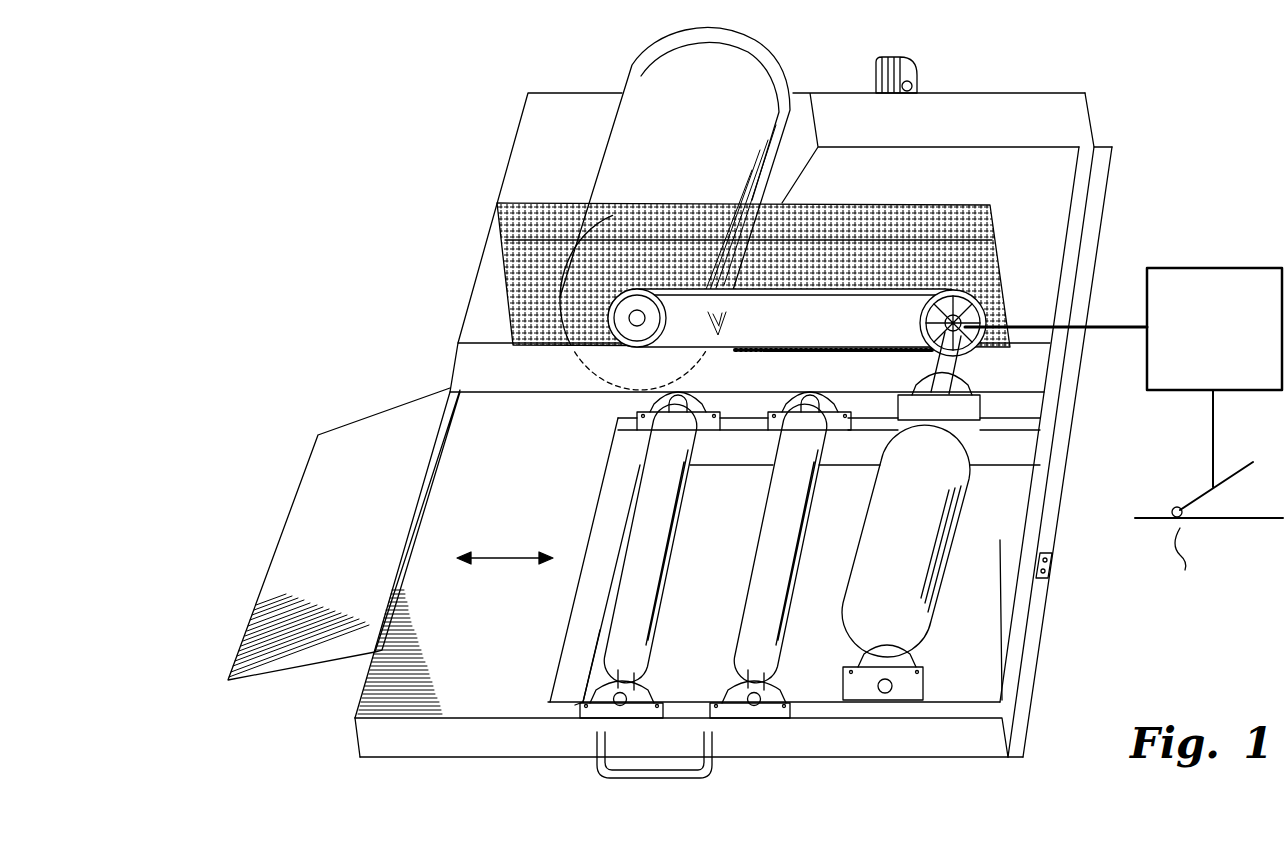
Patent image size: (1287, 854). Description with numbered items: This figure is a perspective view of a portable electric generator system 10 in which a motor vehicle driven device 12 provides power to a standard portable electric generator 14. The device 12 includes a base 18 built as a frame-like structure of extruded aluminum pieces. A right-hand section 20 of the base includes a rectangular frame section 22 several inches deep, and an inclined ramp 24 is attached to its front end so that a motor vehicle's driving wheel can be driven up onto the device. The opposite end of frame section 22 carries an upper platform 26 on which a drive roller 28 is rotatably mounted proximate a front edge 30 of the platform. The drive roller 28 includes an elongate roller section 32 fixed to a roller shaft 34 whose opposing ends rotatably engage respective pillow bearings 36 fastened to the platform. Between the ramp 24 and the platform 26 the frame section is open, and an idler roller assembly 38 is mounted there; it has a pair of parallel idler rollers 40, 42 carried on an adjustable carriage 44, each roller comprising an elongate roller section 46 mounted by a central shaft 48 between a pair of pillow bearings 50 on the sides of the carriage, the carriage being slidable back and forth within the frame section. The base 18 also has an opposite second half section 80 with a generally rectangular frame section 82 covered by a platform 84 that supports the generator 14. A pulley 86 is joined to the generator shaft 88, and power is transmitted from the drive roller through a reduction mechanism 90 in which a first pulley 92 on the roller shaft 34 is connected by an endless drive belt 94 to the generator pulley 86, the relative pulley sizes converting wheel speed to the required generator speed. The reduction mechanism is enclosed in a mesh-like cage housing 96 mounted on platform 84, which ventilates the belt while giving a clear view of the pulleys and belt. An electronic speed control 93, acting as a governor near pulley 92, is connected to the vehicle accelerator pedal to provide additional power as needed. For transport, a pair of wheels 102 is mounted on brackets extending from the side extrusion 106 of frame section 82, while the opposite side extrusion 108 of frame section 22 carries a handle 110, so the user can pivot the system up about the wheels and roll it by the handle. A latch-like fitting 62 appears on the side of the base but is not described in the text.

The portable electric generator system 10 is at (372, 140).
The motor vehicle driven device 12 is at (1070, 533).
The portable electric generator 14 is at (768, 45).
The base 18 is at (987, 745).
The right-hand section 20 is at (428, 737).
The rectangular frame section 22 is at (367, 735).
The inclined ramp 24 is at (322, 490).
The upper platform 26 is at (980, 692).
The drive roller 28 is at (938, 550).
The front edge 30 is at (820, 672).
The elongate roller section 32 is at (936, 507).
The roller shaft 34 is at (938, 427).
The pillow bearings 36 is at (960, 405).
The idler roller assembly 38 is at (618, 483).
The idler roller 40 is at (662, 580).
The idler roller 42 is at (780, 495).
The adjustable carriage 44 is at (597, 520).
The elongate roller section 46 is at (650, 622).
The central shaft 48 is at (592, 665).
The pillow bearings 50 is at (500, 560).
The latch 62 is at (1052, 575).
The second half section 80 is at (1090, 227).
The rectangular frame section 82 is at (1100, 167).
The platform 84 is at (553, 120).
The pulley 86 is at (638, 310).
The generator shaft 88 is at (612, 296).
The reduction mechanism 90 is at (900, 268).
The first pulley 92 is at (920, 306).
The speed control 93 is at (1235, 268).
The endless drive belt 94 is at (822, 302).
The housing 96 is at (495, 212).
The wheels 102 is at (910, 57).
The side extrusion 106 is at (1043, 108).
The opposite side extrusion 108 is at (810, 745).
The handle 110 is at (655, 780).